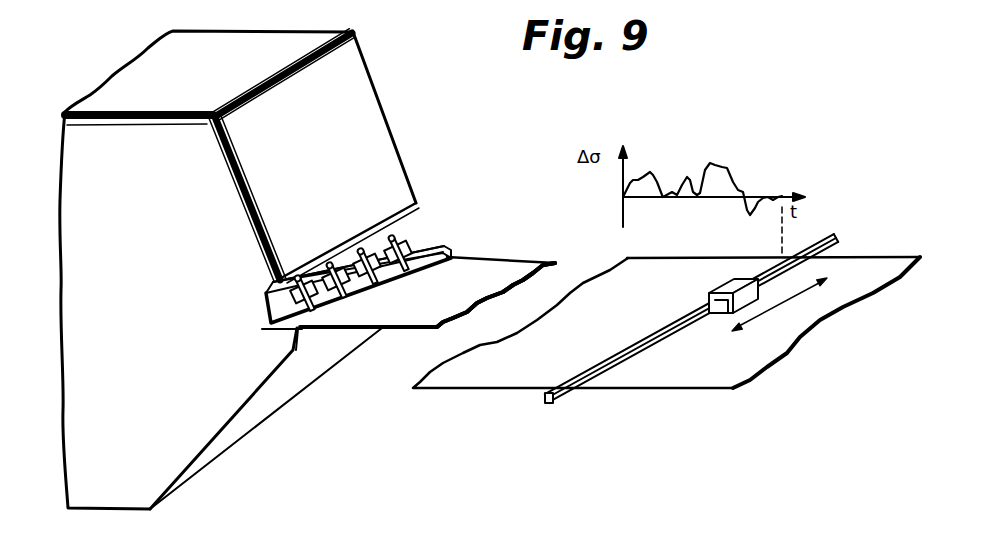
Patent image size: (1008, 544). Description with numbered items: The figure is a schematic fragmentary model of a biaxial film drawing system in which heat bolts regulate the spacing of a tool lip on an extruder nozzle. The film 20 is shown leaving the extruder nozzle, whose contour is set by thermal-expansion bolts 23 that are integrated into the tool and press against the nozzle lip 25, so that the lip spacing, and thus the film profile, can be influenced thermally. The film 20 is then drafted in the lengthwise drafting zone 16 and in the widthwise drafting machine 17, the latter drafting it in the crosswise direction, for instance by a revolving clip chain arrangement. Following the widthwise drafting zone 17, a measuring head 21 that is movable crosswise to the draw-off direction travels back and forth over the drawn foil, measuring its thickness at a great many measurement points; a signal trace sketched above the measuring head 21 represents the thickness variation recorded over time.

The lengthwise drafting zone 16 is at (556, 283).
The widthwise drafting machine 17 is at (556, 283).
The film 20 is at (447, 373).
The measuring head 21 is at (758, 300).
The thermal-expansion bolts 23 is at (405, 238).
The nozzle lip 25 is at (288, 328).